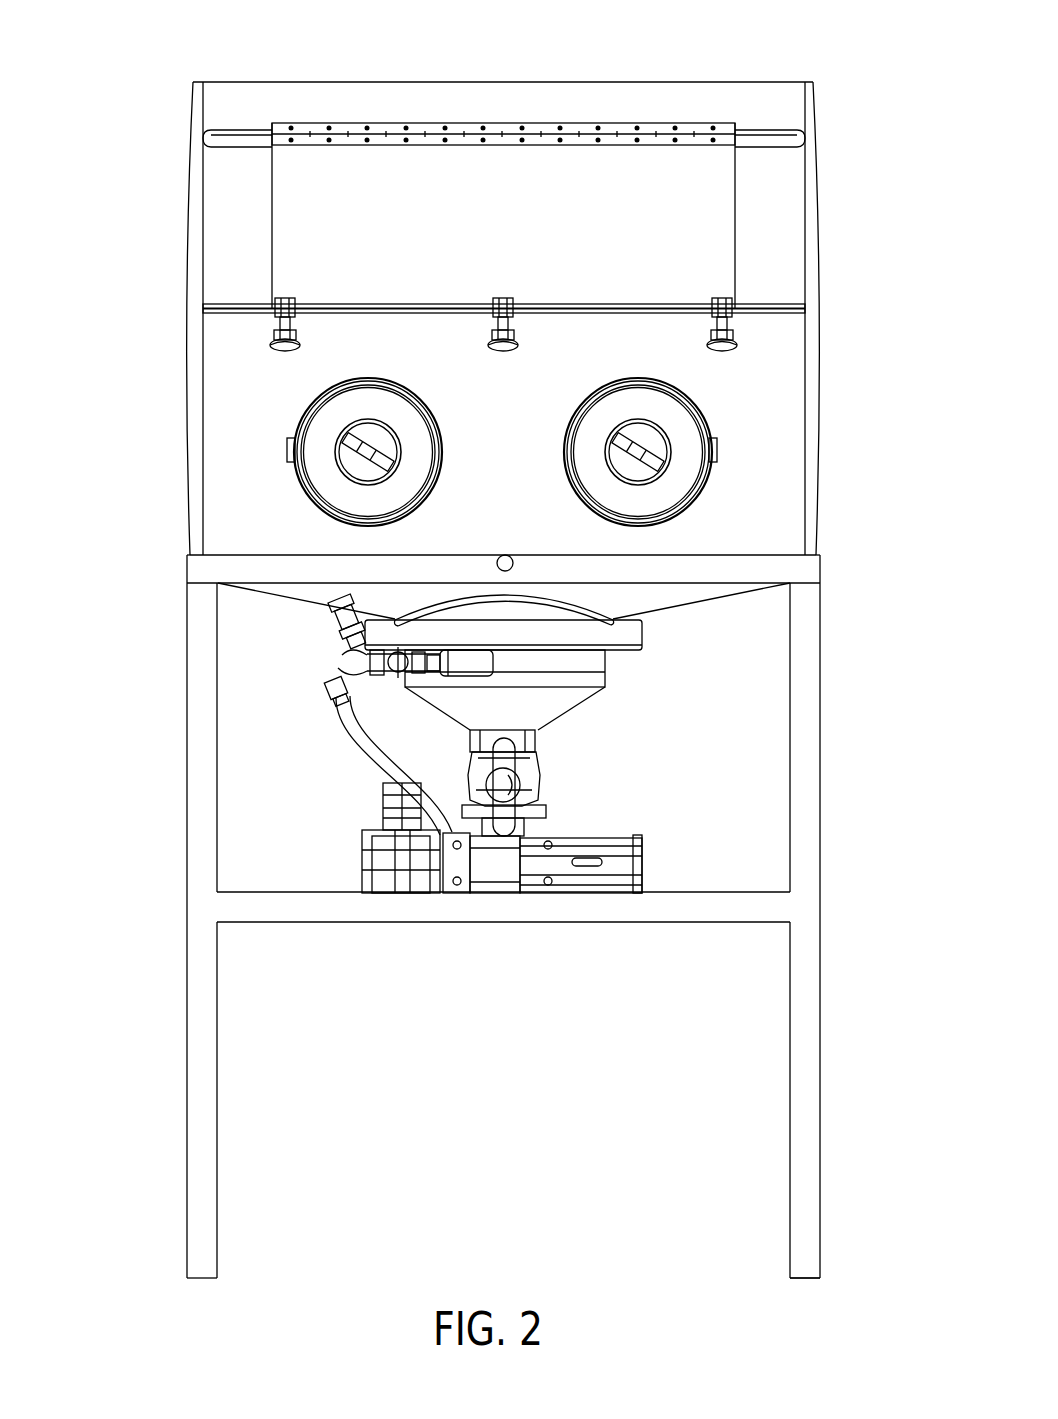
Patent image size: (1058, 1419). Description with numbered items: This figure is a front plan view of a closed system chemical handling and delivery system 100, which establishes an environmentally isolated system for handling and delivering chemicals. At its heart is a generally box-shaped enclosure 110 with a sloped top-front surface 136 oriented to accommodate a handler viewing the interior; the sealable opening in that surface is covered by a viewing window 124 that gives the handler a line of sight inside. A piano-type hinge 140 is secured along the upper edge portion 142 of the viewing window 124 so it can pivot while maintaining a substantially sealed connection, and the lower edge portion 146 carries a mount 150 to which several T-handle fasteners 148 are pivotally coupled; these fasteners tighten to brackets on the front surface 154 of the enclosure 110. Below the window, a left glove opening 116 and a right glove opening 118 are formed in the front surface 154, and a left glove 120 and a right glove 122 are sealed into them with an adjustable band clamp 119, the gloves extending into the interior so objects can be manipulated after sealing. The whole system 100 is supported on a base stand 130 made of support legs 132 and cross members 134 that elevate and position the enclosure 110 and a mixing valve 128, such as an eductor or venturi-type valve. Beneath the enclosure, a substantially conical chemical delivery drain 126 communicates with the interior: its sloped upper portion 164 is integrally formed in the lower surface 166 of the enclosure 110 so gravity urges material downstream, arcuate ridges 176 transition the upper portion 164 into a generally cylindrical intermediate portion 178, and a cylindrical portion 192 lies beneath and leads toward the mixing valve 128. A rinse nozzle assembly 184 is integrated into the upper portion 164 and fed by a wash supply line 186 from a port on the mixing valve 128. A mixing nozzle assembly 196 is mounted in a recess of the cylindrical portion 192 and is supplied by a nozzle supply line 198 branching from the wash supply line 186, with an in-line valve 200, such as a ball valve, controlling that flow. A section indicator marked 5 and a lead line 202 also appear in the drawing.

The section line 5 is at (503, 65).
The closed system chemical handling and delivery system 100 is at (840, 108).
The enclosure 110 is at (822, 442).
The left glove opening 116 is at (375, 378).
The right glove opening 118 is at (615, 378).
The adjustable band clamp 119 is at (288, 450).
The left glove 120 is at (342, 495).
The right glove 122 is at (662, 495).
The viewing window 124 is at (735, 222).
The chemical delivery drain 126 is at (544, 666).
The mixing valve 128 is at (588, 829).
The base stand 130 is at (155, 1075).
The support legs 132 is at (820, 1135).
The cross members 134 is at (630, 922).
The sloped top-front surface 136 is at (254, 238).
The piano-type hinge 140 is at (688, 125).
The upper edge portion 142 is at (742, 150).
The lower edge portion 146 is at (735, 300).
The T-handle fasteners 148 is at (725, 350).
The mount 150 is at (720, 298).
The front surface 154 is at (571, 543).
The upper portion 164 is at (693, 590).
The lower surface 166 is at (748, 587).
The arcuate ridges 176 is at (519, 603).
The intermediate portion 178 is at (643, 634).
The rinse nozzle assembly 184 is at (323, 618).
The wash supply line 186 is at (373, 742).
The cylindrical portion 192 is at (607, 674).
The mixing nozzle assembly 196 is at (379, 686).
The nozzle supply line 198 is at (330, 670).
The in-line valve 200 is at (405, 650).
The hopper cone 202 is at (563, 712).